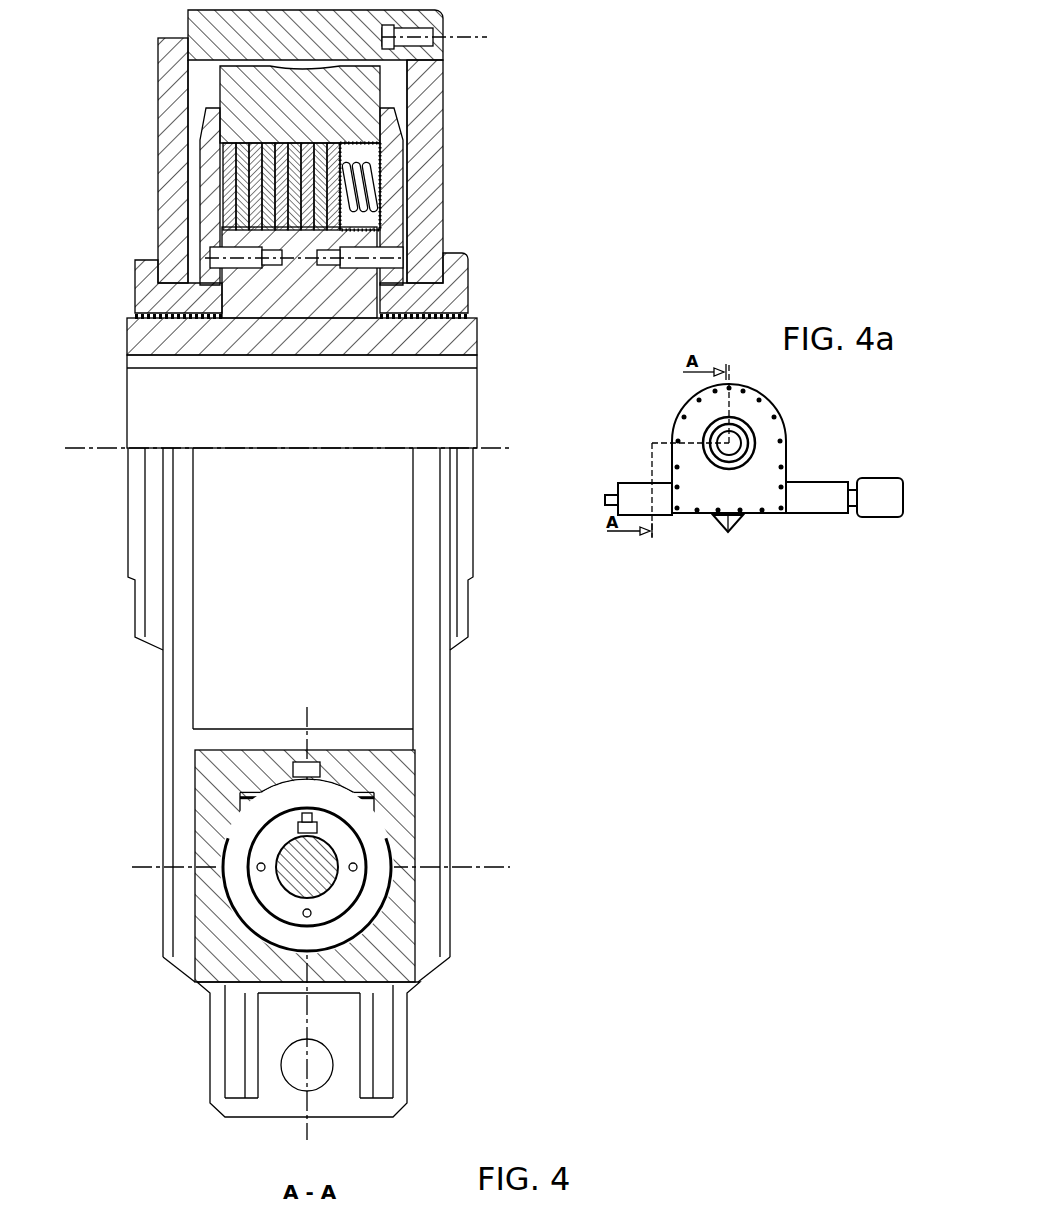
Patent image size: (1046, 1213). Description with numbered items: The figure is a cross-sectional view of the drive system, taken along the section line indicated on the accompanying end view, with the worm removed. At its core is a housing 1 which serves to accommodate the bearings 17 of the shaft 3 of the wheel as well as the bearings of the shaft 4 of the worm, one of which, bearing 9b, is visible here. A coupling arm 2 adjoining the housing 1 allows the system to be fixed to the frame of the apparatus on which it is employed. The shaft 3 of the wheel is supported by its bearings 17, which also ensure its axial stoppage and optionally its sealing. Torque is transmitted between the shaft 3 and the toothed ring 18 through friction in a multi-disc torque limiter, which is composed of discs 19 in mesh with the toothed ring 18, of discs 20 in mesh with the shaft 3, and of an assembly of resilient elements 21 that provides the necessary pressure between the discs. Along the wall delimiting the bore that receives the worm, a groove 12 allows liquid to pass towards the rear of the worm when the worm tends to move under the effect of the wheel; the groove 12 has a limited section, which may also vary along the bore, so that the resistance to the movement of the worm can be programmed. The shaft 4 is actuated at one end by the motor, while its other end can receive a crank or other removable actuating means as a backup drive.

The housing 1 is at (178, 73).
The coupling arm 2 is at (393, 1065).
The shaft 3 is at (433, 402).
The shaft 4 is at (325, 868).
The bearing 9b is at (358, 912).
The groove 12 is at (325, 768).
The bearings 17 is at (153, 298).
The toothed ring 18 is at (313, 100).
The discs 19 is at (238, 213).
The discs 20 is at (248, 168).
The resilient elements 21 is at (372, 185).